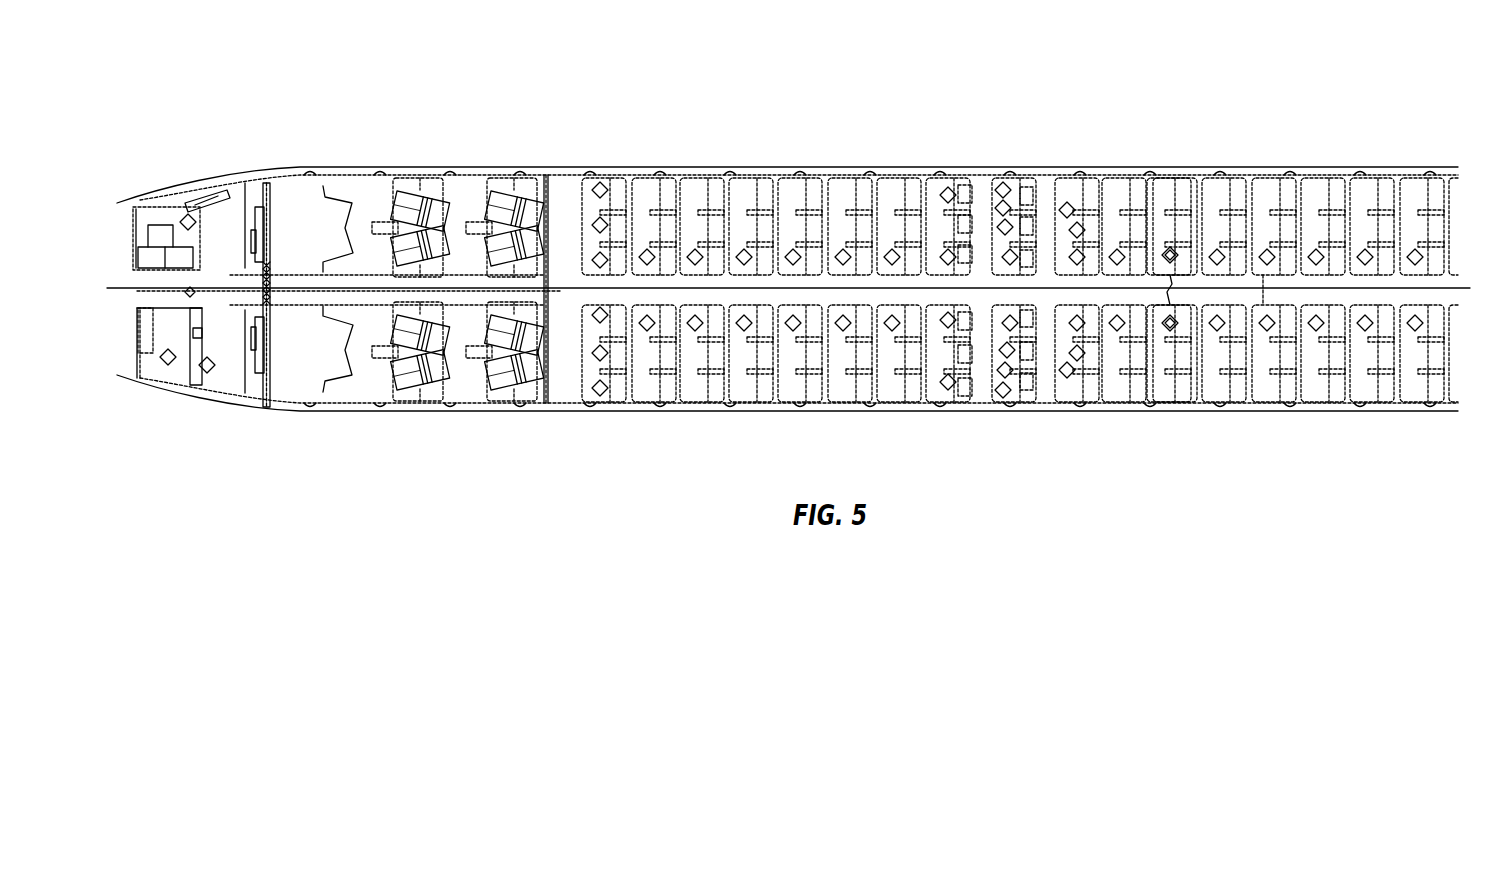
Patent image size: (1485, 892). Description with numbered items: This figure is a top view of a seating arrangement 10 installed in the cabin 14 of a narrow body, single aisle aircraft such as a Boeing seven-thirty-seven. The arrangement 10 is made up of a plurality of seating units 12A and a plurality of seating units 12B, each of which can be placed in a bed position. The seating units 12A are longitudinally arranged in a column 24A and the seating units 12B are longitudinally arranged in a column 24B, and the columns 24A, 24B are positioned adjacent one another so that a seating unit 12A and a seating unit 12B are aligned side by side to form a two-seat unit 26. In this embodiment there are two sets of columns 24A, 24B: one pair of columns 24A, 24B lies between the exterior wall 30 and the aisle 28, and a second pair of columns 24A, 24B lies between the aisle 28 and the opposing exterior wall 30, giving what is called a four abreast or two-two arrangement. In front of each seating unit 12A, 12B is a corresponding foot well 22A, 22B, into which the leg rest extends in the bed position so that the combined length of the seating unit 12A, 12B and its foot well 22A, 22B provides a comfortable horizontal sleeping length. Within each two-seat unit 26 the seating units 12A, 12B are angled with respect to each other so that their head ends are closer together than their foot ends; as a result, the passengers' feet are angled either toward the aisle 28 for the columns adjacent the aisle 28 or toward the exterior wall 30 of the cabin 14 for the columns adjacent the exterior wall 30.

The seating arrangement 10 is at (494, 68).
The cabin 14 is at (573, 167).
The two-seat unit 26 is at (523, 190).
The aisle 28 is at (547, 294).
The exterior wall 30 is at (318, 167).
The seating unit 12A is at (390, 298).
The seating unit 12B is at (508, 405).
The foot well 22A is at (497, 443).
The foot well 22B is at (437, 267).
The column 24A is at (330, 227).
The column 24B is at (362, 256).